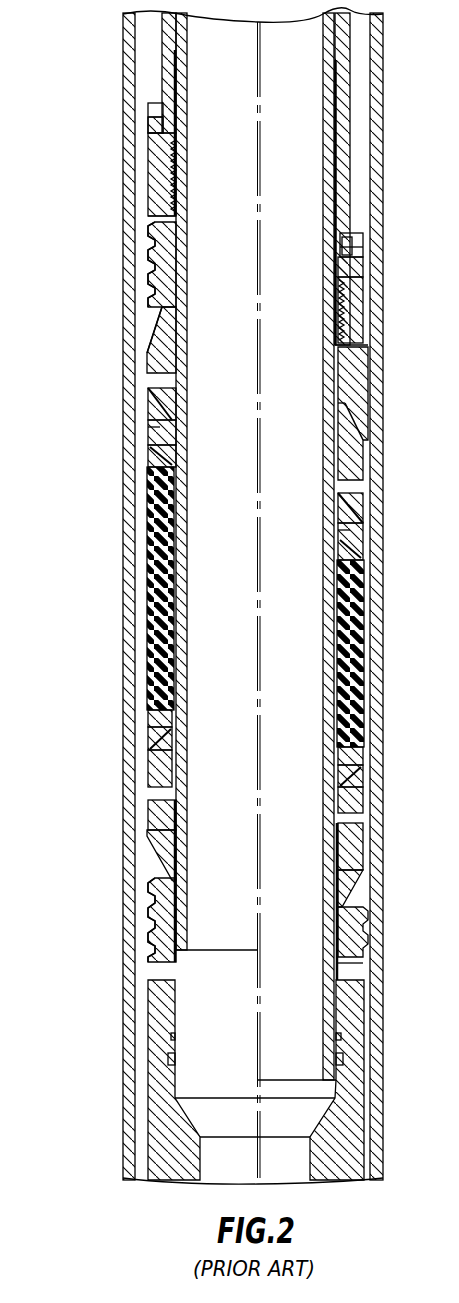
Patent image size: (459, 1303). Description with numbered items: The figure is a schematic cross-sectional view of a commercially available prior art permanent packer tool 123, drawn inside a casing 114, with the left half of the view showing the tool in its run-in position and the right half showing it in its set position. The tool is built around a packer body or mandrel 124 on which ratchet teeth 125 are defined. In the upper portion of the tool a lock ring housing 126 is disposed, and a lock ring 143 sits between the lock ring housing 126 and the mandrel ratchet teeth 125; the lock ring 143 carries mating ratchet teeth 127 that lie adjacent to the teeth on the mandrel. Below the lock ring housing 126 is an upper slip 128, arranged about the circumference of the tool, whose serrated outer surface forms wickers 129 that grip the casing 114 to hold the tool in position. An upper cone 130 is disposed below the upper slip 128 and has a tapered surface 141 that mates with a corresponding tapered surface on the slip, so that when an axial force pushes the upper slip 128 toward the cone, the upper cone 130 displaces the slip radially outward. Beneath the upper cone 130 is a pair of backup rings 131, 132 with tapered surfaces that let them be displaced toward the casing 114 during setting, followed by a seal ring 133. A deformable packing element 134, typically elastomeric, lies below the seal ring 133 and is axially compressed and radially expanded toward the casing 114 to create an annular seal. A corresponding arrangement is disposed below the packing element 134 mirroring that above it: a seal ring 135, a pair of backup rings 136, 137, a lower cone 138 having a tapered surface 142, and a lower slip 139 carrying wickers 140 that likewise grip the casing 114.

The casing 114 is at (135, 602).
The permanent packer tool 123 is at (201, 121).
The packer body or mandrel 124 is at (187, 708).
The ratchet teeth 125 is at (175, 212).
The lock ring housing 126 is at (150, 199).
The mating ratchet teeth 127 is at (152, 153).
The upper slip 128 is at (168, 279).
The wickers 129 is at (150, 239).
The upper cone 130 is at (168, 330).
The backup ring 131 is at (147, 405).
The backup ring 132 is at (147, 432).
The seal ring 133 is at (147, 453).
The packing element 134 is at (165, 573).
The seal ring 135 is at (147, 723).
The backup ring 136 is at (153, 743).
The backup ring 137 is at (153, 781).
The lower cone 138 is at (165, 815).
The lower slip 139 is at (165, 900).
The wickers 140 is at (148, 929).
The tapered surface 141 is at (148, 338).
The tapered surface 142 is at (148, 843).
The lock ring 143 is at (176, 171).